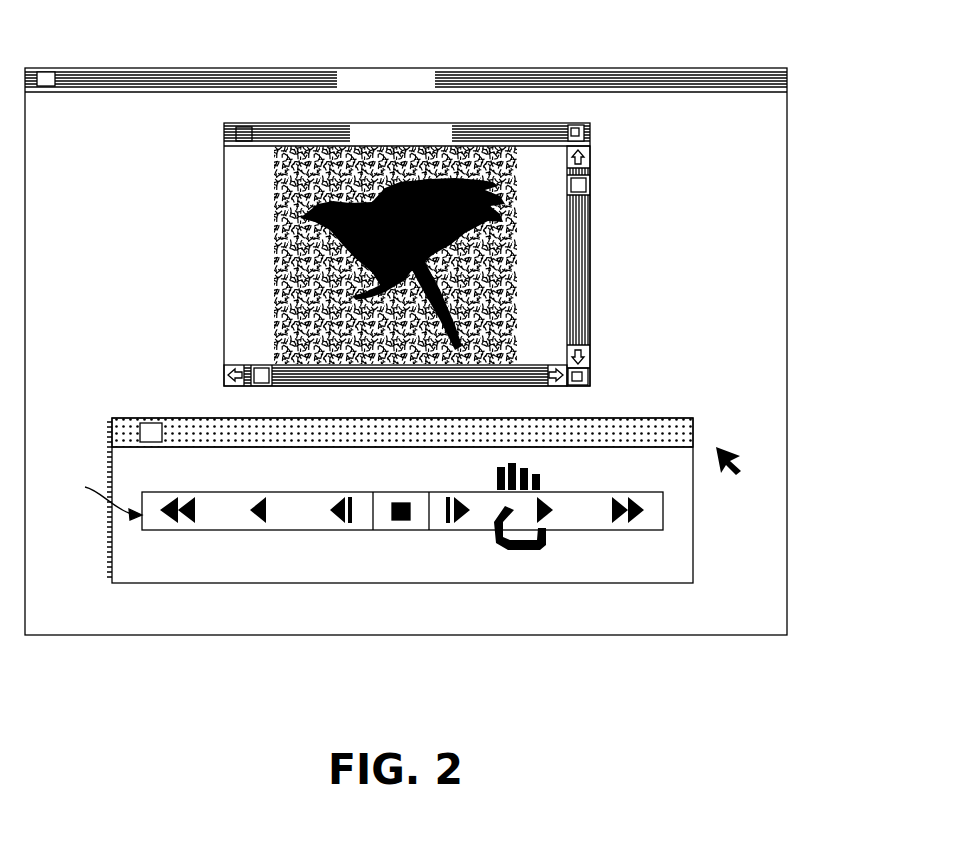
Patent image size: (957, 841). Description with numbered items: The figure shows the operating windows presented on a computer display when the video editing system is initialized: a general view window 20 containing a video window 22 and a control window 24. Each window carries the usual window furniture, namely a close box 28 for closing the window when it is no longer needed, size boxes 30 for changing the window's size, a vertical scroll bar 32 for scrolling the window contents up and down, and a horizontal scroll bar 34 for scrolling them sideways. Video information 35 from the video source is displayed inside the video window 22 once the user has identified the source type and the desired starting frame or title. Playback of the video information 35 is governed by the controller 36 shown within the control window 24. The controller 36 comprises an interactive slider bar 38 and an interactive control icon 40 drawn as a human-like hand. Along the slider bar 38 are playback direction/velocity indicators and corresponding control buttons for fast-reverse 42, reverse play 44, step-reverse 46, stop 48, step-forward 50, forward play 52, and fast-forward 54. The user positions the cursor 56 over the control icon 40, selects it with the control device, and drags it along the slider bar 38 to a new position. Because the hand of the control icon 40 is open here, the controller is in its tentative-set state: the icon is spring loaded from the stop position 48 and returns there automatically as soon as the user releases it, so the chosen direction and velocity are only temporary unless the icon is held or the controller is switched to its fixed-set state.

The view window 20 is at (152, 40).
The video window 22 is at (223, 235).
The control window 24 is at (112, 431).
The close box 28 is at (46, 72).
The size box 30 is at (576, 128).
The vertical scroll bar 32 is at (590, 212).
The horizontal scroll bar 34 is at (532, 393).
The video information 35 is at (278, 326).
The controller 36 is at (97, 499).
The slider bar 38 is at (222, 503).
The control icon 40 is at (541, 474).
The fast-reverse control button 42 is at (187, 525).
The reverse play control button 44 is at (258, 525).
The step-reverse control button 46 is at (342, 525).
The stop control button 48 is at (402, 522).
The step-forward control button 50 is at (460, 525).
The forward play control button 52 is at (545, 525).
The fast-forward control button 54 is at (632, 525).
The cursor 56 is at (738, 462).